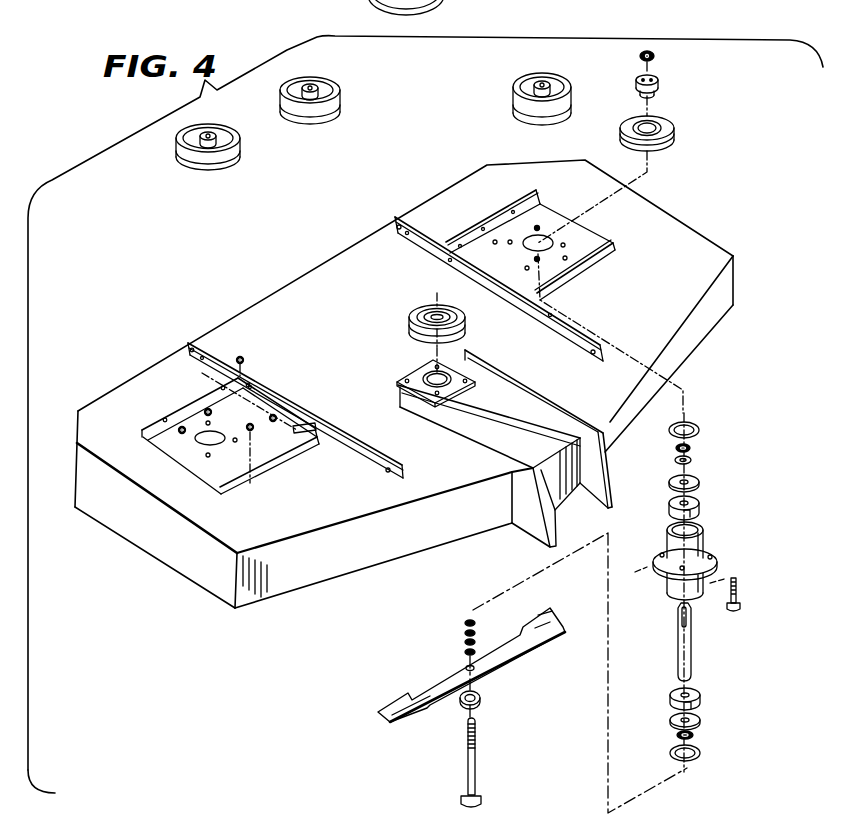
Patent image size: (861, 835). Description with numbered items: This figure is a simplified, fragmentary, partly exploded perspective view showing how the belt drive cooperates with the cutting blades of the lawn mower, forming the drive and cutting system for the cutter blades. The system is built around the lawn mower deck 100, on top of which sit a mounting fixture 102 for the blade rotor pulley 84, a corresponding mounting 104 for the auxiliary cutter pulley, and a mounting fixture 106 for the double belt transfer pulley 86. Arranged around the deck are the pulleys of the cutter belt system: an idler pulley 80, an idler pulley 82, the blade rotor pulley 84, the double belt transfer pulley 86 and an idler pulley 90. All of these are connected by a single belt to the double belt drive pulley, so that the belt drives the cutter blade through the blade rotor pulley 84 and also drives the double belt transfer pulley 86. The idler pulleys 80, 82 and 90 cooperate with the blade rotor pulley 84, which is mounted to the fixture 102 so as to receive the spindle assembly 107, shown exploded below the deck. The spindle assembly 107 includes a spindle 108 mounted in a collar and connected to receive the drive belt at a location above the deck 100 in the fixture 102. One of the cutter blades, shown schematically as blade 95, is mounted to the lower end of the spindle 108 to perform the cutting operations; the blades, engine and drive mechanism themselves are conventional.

The idler pulley 80 is at (340, 82).
The idler pulley 82 is at (545, 73).
The blade rotor pulley 84 is at (672, 116).
The double belt transfer pulley 86 is at (413, 308).
The idler pulley 90 is at (218, 162).
The cutter blade 95 is at (437, 682).
The lawn mower deck 100 is at (695, 246).
The mounting fixture 102 is at (584, 241).
The mounting 104 is at (192, 458).
The mounting fixture 106 is at (425, 366).
The spindle assembly 107 is at (727, 606).
The spindle 108 is at (711, 642).